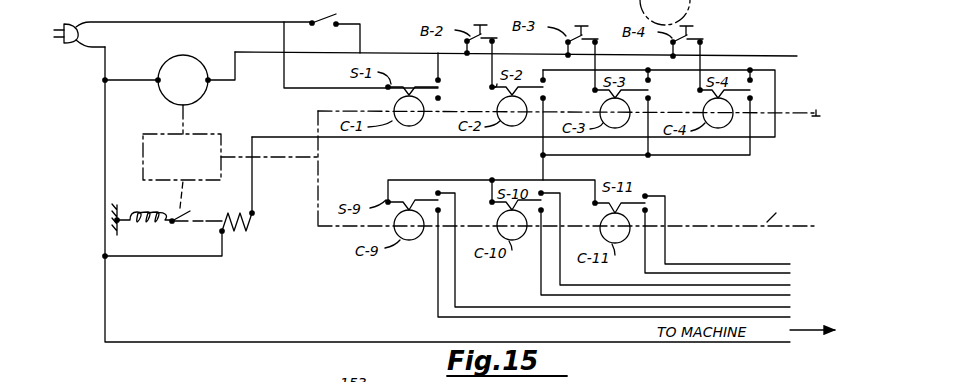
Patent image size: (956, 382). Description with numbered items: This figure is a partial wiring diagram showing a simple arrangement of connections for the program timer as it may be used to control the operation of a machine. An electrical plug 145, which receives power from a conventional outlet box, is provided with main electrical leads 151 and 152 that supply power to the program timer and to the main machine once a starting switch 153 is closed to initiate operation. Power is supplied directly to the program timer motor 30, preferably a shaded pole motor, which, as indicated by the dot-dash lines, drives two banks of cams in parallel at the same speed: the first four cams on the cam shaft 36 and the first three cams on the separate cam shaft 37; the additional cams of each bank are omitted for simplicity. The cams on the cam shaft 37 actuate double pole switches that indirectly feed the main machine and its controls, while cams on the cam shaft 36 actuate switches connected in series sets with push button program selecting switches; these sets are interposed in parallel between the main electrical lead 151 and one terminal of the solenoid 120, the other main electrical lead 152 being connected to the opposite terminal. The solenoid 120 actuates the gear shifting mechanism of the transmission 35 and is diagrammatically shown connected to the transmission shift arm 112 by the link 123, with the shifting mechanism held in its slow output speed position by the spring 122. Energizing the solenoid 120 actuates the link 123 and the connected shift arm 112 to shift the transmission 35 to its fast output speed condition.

The electrical plug 145 is at (72, 45).
The main electrical lead 151 is at (173, 27).
The program timer motor 30 is at (213, 55).
The transmission 35 is at (157, 131).
The main electrical lead 152 is at (105, 162).
The starting switch 153 is at (348, 19).
The transmission shift arm 112 is at (203, 194).
The spring 122 is at (141, 226).
The link 123 is at (180, 226).
The solenoid 120 is at (244, 233).
The cam shaft 36 is at (574, 99).
The cam shaft 37 is at (566, 210).